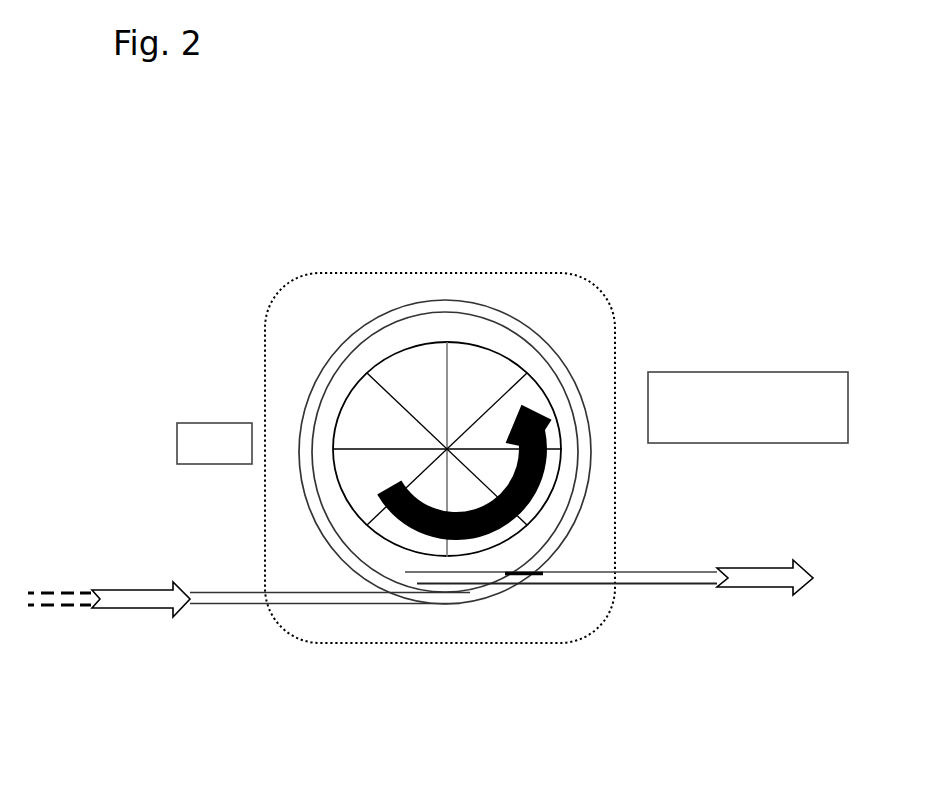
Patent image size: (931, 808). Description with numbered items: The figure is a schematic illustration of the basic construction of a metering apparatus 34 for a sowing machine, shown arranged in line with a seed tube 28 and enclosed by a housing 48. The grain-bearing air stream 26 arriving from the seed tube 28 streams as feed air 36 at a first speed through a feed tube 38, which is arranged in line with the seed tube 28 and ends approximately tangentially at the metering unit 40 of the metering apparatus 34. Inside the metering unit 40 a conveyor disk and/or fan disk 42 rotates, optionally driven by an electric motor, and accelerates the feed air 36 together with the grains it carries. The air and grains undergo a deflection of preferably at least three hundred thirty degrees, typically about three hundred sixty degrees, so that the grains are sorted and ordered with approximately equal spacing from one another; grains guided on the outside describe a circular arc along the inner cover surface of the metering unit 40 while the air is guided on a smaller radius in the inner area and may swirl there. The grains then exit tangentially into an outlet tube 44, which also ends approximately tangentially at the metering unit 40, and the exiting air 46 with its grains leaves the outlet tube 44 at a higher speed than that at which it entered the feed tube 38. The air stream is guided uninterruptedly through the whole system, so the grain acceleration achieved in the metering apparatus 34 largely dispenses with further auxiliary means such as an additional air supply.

The grain-bearing air stream 26 is at (141, 590).
The feed air 36 is at (330, 598).
The seed tube 28 is at (52, 608).
The metering apparatus 34 is at (313, 264).
The feed tube 38 is at (240, 547).
The metering unit 40 is at (443, 268).
The conveyor disk and/or fan disk 42 is at (482, 365).
The outlet tube 44 is at (698, 513).
The exiting air 46 is at (609, 571).
The housing 48 is at (318, 336).